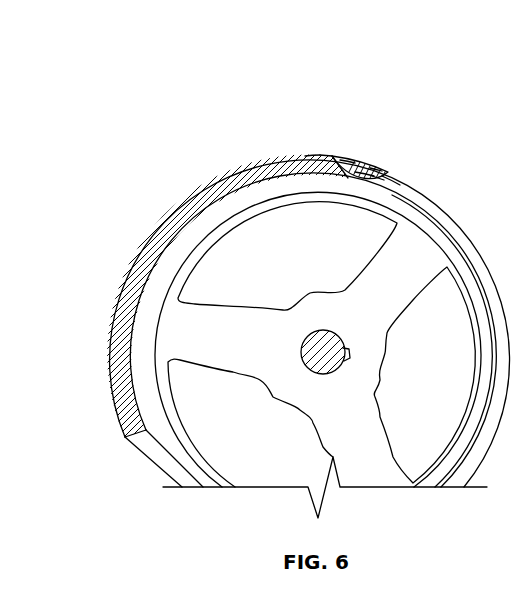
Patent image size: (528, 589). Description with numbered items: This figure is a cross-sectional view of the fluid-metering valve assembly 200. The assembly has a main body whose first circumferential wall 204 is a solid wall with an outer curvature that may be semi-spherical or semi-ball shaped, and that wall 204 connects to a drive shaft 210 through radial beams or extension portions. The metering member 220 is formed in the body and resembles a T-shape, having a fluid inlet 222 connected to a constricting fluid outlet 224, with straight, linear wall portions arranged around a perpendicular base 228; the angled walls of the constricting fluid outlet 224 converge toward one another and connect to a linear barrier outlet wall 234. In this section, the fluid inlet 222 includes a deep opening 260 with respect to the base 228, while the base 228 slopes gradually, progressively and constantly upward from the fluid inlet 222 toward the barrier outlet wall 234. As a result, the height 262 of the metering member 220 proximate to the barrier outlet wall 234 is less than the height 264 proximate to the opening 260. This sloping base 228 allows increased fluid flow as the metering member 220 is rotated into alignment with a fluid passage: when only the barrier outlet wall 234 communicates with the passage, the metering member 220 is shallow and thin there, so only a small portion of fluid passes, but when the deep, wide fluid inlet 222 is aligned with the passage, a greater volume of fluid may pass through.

The fluid-metering valve assembly 200 is at (281, 332).
The first circumferential wall 204 is at (237, 172).
The drive shaft 210 is at (322, 352).
The metering member 220 is at (357, 146).
The fluid inlet 222 is at (370, 167).
The constricting fluid outlet 224 is at (350, 153).
The perpendicular base 228 is at (375, 167).
The linear barrier outlet wall 234 is at (332, 156).
The deep opening 260 is at (378, 168).
The height proximate to the barrier outlet wall 262 is at (332, 156).
The height proximate to the opening 264 is at (382, 176).